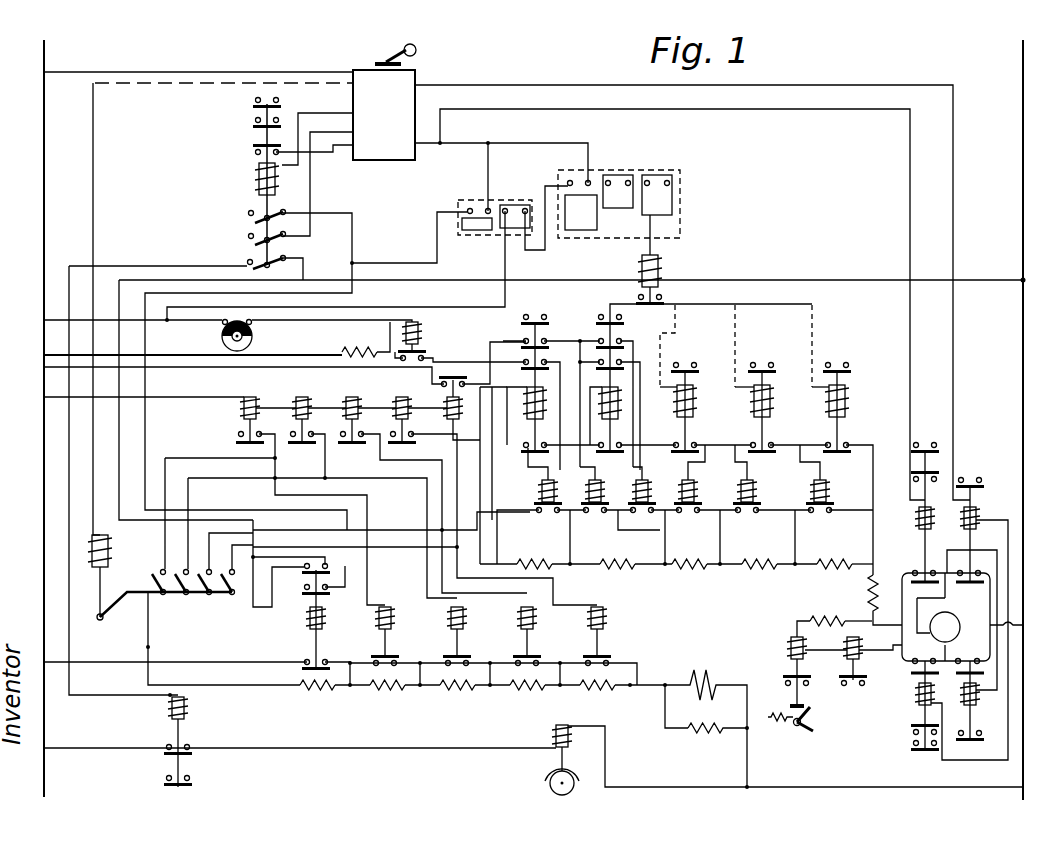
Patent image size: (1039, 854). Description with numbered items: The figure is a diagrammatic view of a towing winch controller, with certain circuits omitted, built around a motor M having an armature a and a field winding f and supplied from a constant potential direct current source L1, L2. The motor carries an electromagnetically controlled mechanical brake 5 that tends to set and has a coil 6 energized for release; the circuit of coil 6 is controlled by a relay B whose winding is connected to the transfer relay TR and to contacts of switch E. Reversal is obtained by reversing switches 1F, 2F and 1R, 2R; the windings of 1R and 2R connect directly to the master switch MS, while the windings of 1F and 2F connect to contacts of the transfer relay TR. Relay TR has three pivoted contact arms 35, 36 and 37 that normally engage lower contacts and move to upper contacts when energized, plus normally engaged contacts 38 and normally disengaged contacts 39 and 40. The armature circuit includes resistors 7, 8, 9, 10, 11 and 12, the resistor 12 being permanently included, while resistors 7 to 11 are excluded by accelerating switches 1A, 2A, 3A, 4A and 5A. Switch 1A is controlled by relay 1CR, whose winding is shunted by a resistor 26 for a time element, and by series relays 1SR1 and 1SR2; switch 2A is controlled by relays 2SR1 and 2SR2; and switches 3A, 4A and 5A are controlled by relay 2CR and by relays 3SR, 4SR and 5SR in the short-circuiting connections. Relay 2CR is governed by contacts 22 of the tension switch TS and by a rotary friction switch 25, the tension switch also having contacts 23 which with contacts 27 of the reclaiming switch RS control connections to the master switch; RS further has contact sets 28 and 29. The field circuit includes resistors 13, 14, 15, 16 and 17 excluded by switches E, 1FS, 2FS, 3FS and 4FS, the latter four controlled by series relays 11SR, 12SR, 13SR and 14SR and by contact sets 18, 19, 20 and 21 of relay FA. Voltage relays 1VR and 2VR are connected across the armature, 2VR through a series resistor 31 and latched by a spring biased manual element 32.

The supply line L1 is at (28, 413).
The supply line L2 is at (1008, 414).
The master switch MS is at (384, 102).
The normally disengaged contacts of transfer relay 40 is at (254, 100).
The normally disengaged contacts of transfer relay 39 is at (254, 123).
The normally engaged contacts of transfer relay 38 is at (254, 149).
The transfer relay TR is at (254, 178).
The pivoted contact arm 37 is at (249, 216).
The pivoted contact arm 36 is at (248, 237).
The pivoted contact arm 35 is at (248, 261).
The tension switch TS is at (491, 221).
The contacts of tension switch 23 is at (475, 208).
The contacts of tension switch 22 is at (514, 204).
The reclaiming switch RS is at (635, 195).
The normally disengaged contacts of reclaiming switch 27 is at (590, 180).
The set of normally engaged contacts 28 is at (628, 180).
The set of normally engaged contacts 29 is at (666, 180).
The electroresponsive relay 2CR is at (660, 262).
The switch 25 is at (220, 338).
The resistor 26 is at (338, 352).
The electroresponsive relay 1CR is at (424, 332).
The series relay 1SR1 is at (458, 376).
The electroresponsive relay 11SR is at (242, 416).
The electroresponsive relay 12SR is at (298, 404).
The electroresponsive relay 13SR is at (351, 404).
The electroresponsive relay 14SR is at (401, 404).
The accelerating switch 1A is at (536, 320).
The accelerating switch 2A is at (612, 320).
The accelerating switch 3A is at (678, 366).
The accelerating switch 4A is at (764, 366).
The accelerating switch 5A is at (842, 366).
The relay 1SR2 is at (540, 520).
The relay 2SR1 is at (594, 520).
The relay 2SR2 is at (660, 514).
The relay 3SR is at (692, 478).
The relay 4SR is at (754, 510).
The relay 5SR is at (828, 510).
The resistor 7 is at (554, 566).
The resistor 8 is at (616, 566).
The resistor 9 is at (682, 566).
The resistor 10 is at (776, 566).
The resistor 11 is at (830, 566).
The resistor 12 is at (870, 580).
The multi-contact electroresponsive relay FA is at (112, 560).
The set of contacts 18 is at (163, 596).
The set of contacts 19 is at (188, 596).
The set of contacts 20 is at (210, 596).
The set of contacts 21 is at (234, 596).
The electroresponsive switch E is at (326, 618).
The electroresponsive switch 1FS is at (400, 630).
The electroresponsive switch 2FS is at (470, 630).
The electroresponsive switch 3FS is at (540, 630).
The electroresponsive switch 4FS is at (610, 630).
The resistor 13 is at (304, 688).
The resistor 14 is at (372, 688).
The resistor 15 is at (440, 688).
The resistor 16 is at (540, 688).
The resistor 17 is at (580, 688).
The field winding f is at (708, 676).
The coil 6 is at (550, 730).
The mechanical brake 5 is at (546, 782).
The electroresponsive relay B is at (190, 708).
The series resistor 31 is at (810, 620).
The voltage relay 2VR is at (790, 650).
The voltage relay 1VR is at (854, 686).
The spring biased manual element 32 is at (795, 726).
The reversing switch 1F is at (914, 526).
The reversing switch 1R is at (978, 518).
The reversing switch 2R is at (910, 700).
The reversing switch 2F is at (976, 700).
The motor M is at (946, 617).
The armature a is at (945, 627).